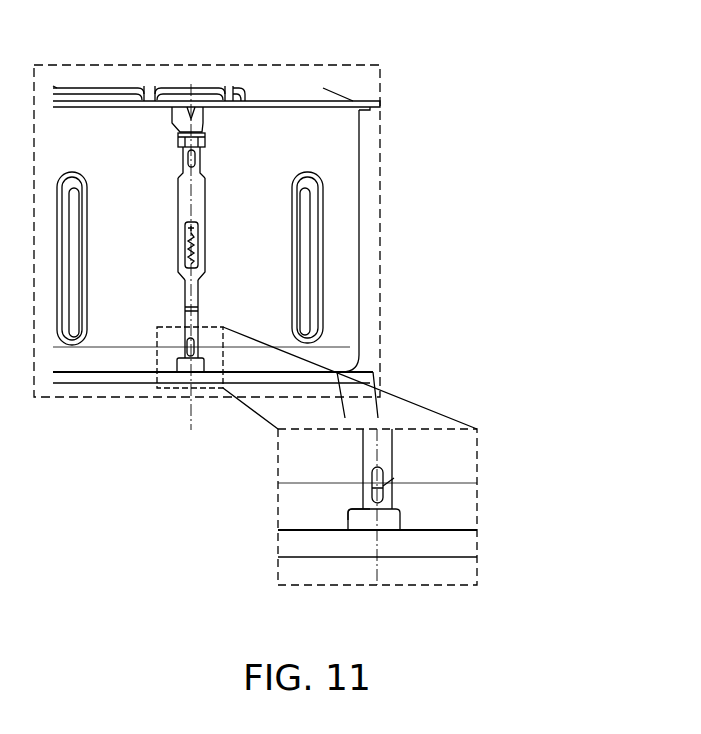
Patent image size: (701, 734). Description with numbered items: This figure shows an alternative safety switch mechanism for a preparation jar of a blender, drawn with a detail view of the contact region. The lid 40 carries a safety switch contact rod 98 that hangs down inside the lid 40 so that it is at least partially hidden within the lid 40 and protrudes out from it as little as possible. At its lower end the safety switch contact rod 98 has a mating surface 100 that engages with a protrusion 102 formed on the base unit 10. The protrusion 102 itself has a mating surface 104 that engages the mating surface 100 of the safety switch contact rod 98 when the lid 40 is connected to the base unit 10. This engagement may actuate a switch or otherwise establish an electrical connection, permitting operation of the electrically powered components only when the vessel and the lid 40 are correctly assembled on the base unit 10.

The base unit 10 is at (362, 408).
The lid 40 is at (364, 191).
The safety switch contact rod 98 is at (193, 238).
The mating surface 100 is at (380, 500).
The protrusion 102 is at (184, 364).
The mating surface 104 is at (358, 509).